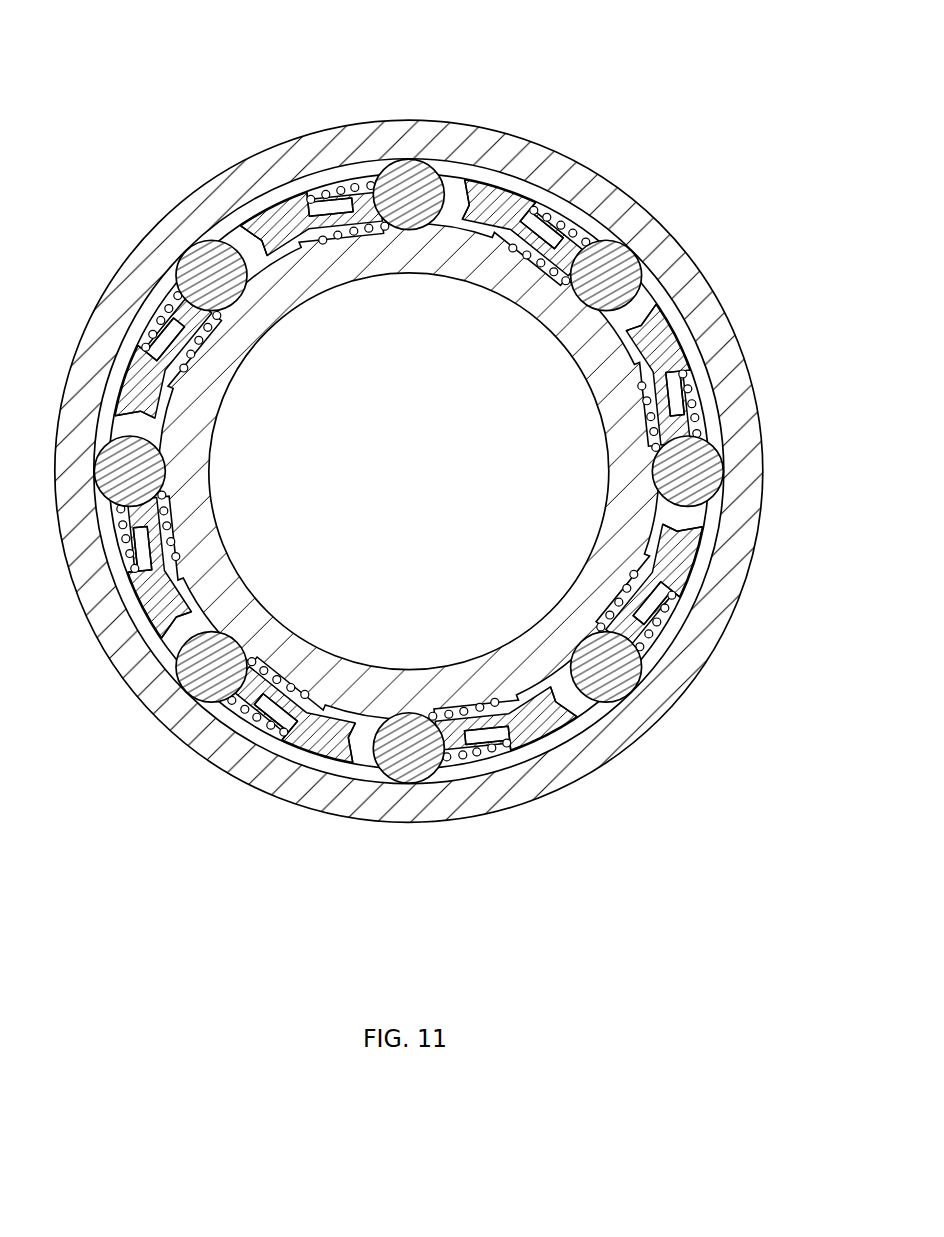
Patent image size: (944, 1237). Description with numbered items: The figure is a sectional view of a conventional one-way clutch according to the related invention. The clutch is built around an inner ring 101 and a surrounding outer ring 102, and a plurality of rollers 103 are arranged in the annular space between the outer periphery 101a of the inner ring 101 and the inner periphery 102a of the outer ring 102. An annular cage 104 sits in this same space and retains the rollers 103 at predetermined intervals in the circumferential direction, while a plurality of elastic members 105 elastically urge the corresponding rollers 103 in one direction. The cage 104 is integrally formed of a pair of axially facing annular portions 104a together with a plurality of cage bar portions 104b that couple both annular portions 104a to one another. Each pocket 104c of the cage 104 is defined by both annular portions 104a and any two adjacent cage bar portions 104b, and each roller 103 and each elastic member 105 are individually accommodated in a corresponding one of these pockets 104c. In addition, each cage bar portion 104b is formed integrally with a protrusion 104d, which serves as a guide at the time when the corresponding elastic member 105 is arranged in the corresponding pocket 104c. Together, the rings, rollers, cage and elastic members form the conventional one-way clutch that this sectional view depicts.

The inner ring 101 is at (409, 471).
The outer periphery of the inner ring 101a is at (636, 352).
The outer ring 102 is at (409, 424).
The inner periphery of the outer ring 102a is at (508, 178).
The roller 103 is at (611, 246).
The annular cage 104 is at (479, 471).
The annular portion 104a is at (712, 402).
The cage bar portion 104b is at (660, 346).
The pocket 104c is at (700, 508).
The protrusion 104d is at (682, 372).
The elastic member 105 is at (547, 209).